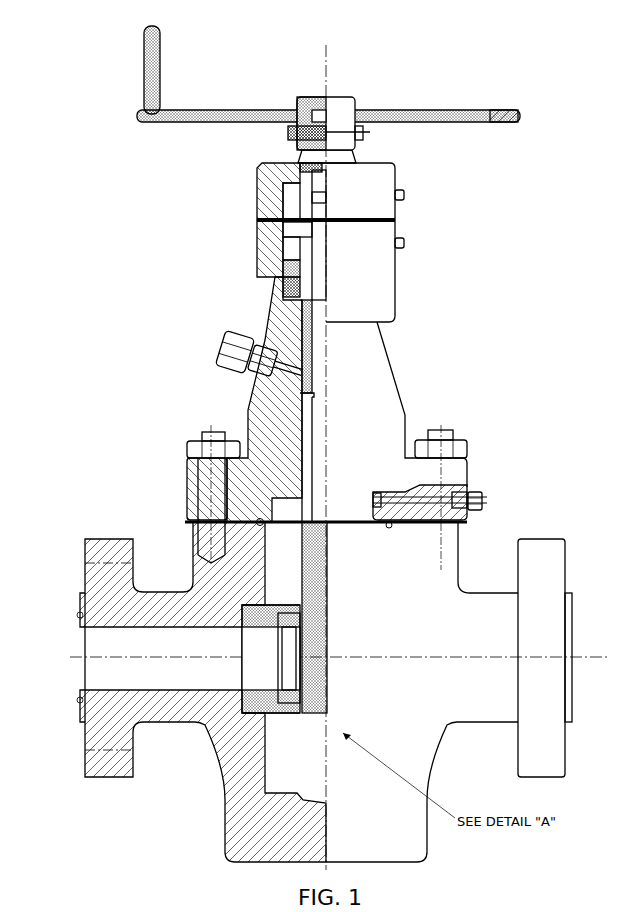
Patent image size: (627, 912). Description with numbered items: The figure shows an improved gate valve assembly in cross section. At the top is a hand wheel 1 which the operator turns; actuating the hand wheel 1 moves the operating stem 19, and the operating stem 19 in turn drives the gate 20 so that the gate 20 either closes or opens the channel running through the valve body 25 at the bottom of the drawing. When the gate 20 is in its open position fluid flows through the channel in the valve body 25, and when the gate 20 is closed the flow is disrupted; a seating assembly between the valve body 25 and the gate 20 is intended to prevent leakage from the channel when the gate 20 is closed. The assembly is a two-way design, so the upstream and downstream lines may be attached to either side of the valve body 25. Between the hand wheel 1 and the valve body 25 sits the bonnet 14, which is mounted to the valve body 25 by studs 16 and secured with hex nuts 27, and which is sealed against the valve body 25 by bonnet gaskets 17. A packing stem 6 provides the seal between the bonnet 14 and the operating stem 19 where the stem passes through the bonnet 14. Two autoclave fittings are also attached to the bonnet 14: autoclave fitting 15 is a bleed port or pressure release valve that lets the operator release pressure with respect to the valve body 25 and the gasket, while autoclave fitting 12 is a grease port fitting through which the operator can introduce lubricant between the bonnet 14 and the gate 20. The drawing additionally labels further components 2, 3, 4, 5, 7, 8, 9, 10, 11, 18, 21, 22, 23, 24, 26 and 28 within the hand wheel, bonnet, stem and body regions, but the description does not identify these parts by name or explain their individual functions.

The hand wheel 1 is at (518, 117).
The cover 2 is at (397, 305).
The screws 3 is at (403, 243).
The bushing 4 is at (292, 246).
The plate 5 is at (300, 258).
The packing stem 6 is at (280, 325).
The gate 7 is at (218, 757).
The stem nut 8 is at (322, 198).
The bonnet 9 is at (290, 210).
The gland 10 is at (292, 290).
The valve body 11 is at (224, 805).
The autoclave fitting 12 is at (221, 358).
The bonnet 14 is at (467, 473).
The autoclave fitting 15 is at (483, 493).
The studs 16 is at (240, 700).
The bonnet gaskets 17 is at (258, 520).
The pin 18 is at (363, 132).
The operating stem 19 is at (283, 308).
The gate 20 is at (300, 565).
The seat ring 21 is at (240, 605).
The seat seal 22 is at (327, 682).
The cap 23 is at (335, 168).
The bearing 24 is at (292, 232).
The valve body 25 is at (460, 567).
The yoke bolt 26 is at (452, 432).
The hex nuts 27 is at (467, 445).
The bonnet bolt 28 is at (202, 437).